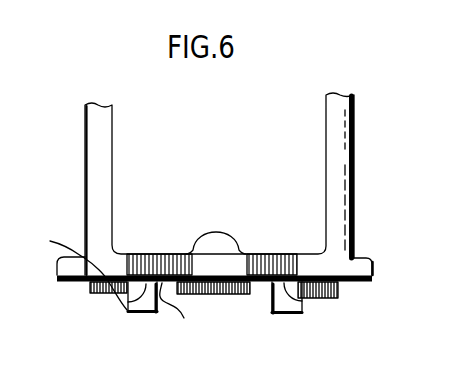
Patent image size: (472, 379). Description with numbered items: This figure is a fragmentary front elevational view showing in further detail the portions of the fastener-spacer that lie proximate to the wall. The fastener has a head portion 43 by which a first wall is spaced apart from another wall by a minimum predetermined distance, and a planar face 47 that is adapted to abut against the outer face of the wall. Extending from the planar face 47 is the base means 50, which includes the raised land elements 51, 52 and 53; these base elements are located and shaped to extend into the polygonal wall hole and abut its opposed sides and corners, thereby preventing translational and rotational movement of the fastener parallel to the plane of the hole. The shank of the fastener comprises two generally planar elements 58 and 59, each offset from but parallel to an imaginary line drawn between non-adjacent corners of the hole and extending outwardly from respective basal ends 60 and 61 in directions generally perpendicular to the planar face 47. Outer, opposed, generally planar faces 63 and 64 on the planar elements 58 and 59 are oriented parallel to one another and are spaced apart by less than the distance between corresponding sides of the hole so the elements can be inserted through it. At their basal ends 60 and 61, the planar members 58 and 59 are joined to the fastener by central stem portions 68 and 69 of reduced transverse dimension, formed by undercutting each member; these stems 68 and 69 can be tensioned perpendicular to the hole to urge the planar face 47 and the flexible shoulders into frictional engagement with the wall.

The head portion 43 is at (335, 150).
The outer planar face 64 is at (73, 269).
The outer planar face 63 is at (306, 300).
The basal end 61 is at (126, 284).
The basal end 60 is at (292, 258).
The central stem portion 68 is at (256, 274).
The raised land element 53 is at (90, 291).
The central stem portion 69 is at (147, 313).
The planar element 59 is at (128, 310).
The planar face 47 is at (187, 314).
The base means 50 is at (228, 297).
The raised land element 51 is at (247, 283).
The planar element 58 is at (303, 313).
The raised land element 52 is at (352, 291).